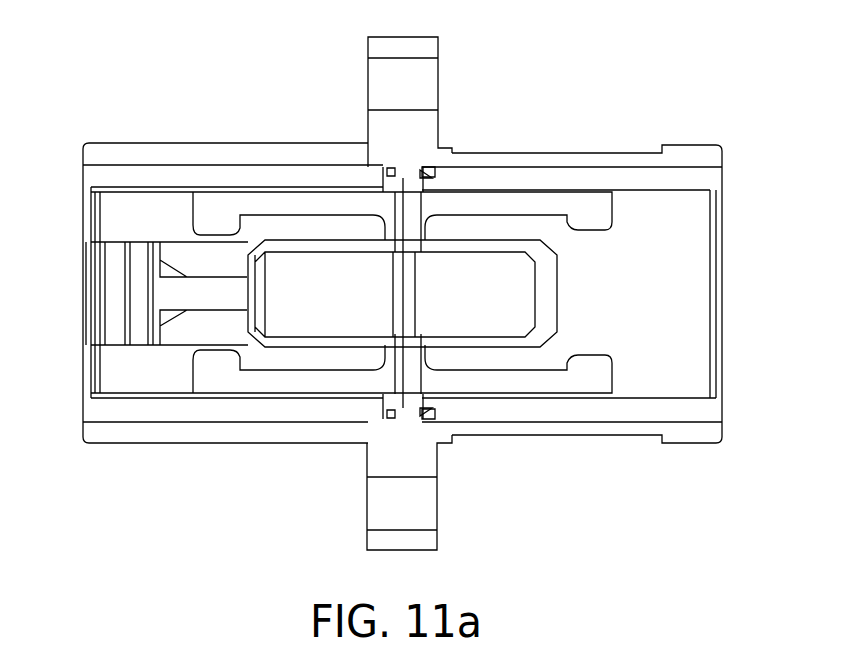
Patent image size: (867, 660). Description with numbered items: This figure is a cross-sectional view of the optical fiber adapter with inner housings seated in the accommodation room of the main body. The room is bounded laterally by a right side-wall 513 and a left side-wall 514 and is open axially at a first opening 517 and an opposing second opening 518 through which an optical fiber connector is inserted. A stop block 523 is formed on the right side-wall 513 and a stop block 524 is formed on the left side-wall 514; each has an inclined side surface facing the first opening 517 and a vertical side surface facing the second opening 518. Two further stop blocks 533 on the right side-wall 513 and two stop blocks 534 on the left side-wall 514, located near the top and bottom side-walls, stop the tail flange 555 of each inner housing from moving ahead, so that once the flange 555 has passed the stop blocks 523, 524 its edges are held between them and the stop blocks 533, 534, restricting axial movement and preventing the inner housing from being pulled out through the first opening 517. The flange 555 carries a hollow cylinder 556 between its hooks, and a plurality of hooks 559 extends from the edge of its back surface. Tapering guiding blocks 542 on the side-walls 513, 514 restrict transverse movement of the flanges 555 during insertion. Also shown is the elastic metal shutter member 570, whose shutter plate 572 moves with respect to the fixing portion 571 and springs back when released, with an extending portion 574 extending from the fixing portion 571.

The right side-wall 513 is at (100, 148).
The left side-wall 514 is at (103, 436).
The first opening 517 is at (702, 262).
The second opening 518 is at (103, 373).
The stop block 523 is at (426, 168).
The stop block 524 is at (420, 420).
The stop block 533 is at (376, 178).
The stop block 534 is at (373, 410).
The guiding block 542 is at (433, 176).
The flange 555 is at (393, 192).
The hollow cylinder 556 is at (226, 212).
The hooks 559 is at (390, 165).
The elastic shutter member 570 is at (110, 290).
The fixing portion 571 is at (156, 345).
The shutter plate 572 is at (138, 325).
The extending portion 574 is at (202, 297).